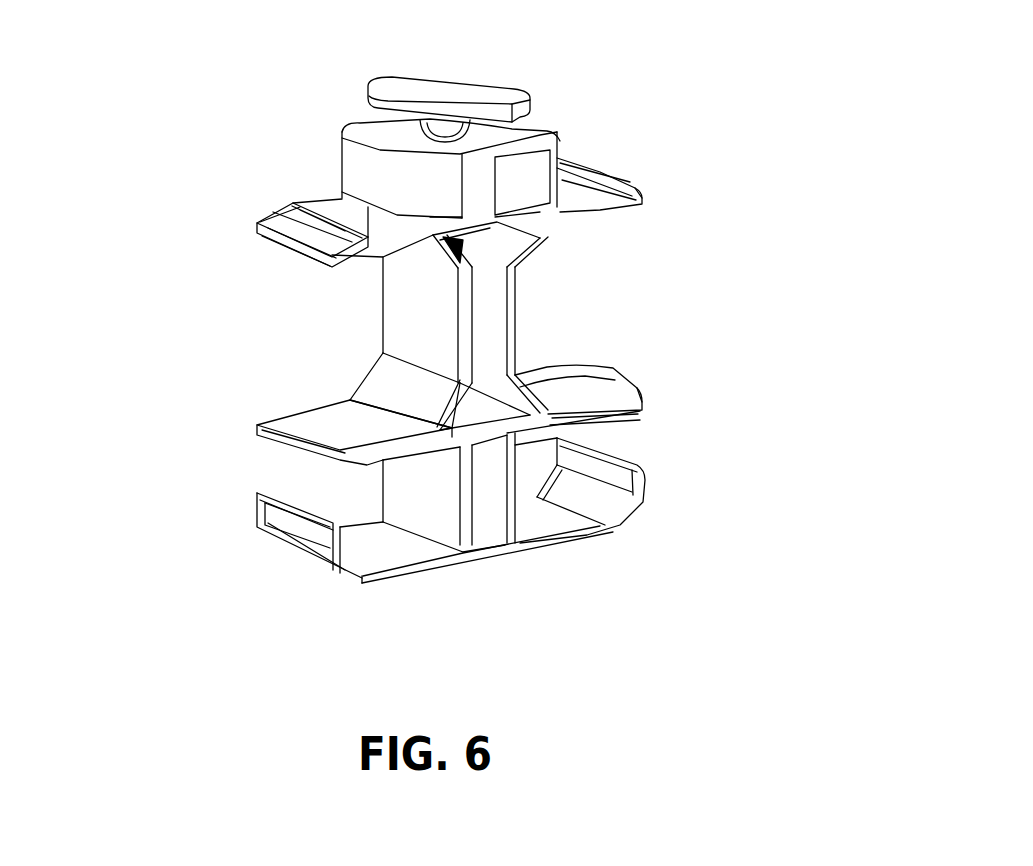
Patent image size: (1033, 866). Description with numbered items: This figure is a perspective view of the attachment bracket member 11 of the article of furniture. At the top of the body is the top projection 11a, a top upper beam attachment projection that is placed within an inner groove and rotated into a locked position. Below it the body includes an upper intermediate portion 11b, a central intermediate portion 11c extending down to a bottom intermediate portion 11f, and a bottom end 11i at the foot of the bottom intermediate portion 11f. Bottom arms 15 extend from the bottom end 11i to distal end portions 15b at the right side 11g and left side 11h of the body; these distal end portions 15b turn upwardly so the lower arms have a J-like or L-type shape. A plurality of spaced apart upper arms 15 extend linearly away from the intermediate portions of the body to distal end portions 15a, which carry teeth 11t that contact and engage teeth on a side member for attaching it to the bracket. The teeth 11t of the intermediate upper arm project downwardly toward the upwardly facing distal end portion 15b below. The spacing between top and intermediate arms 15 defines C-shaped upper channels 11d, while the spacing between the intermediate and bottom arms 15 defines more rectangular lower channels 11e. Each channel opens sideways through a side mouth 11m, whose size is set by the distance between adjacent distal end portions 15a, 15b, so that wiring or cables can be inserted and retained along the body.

The attachment bracket member 11 is at (713, 117).
The top projection 11a is at (467, 82).
The upper intermediate portion 11b is at (483, 187).
The central intermediate portion 11c is at (447, 328).
The upper channel 11d is at (323, 290).
The lower channel 11e is at (368, 553).
The bottom intermediate portion 11f is at (482, 500).
The right side 11g is at (230, 552).
The left side 11h is at (637, 530).
The bottom end 11i is at (497, 553).
The side mouth 11m is at (633, 300).
The teeth 11t is at (297, 207).
The arm 15 is at (327, 203).
The distal end portion of upper arm 15a is at (638, 203).
The distal end portion of bottom arm 15b is at (270, 523).